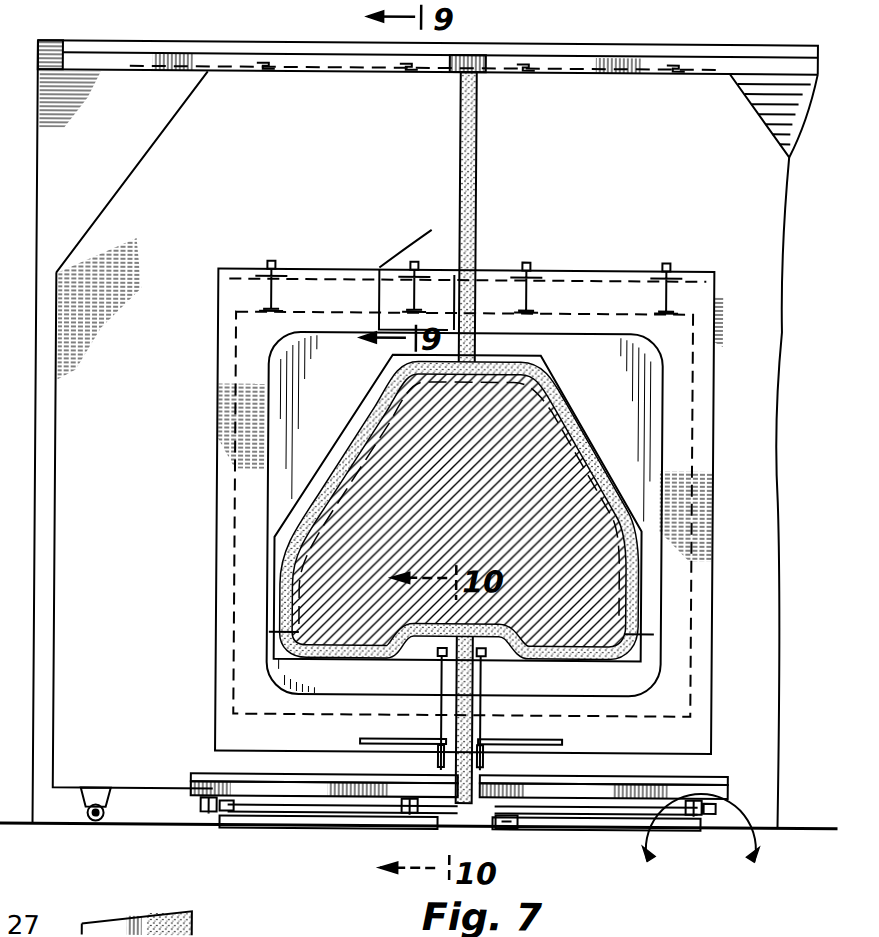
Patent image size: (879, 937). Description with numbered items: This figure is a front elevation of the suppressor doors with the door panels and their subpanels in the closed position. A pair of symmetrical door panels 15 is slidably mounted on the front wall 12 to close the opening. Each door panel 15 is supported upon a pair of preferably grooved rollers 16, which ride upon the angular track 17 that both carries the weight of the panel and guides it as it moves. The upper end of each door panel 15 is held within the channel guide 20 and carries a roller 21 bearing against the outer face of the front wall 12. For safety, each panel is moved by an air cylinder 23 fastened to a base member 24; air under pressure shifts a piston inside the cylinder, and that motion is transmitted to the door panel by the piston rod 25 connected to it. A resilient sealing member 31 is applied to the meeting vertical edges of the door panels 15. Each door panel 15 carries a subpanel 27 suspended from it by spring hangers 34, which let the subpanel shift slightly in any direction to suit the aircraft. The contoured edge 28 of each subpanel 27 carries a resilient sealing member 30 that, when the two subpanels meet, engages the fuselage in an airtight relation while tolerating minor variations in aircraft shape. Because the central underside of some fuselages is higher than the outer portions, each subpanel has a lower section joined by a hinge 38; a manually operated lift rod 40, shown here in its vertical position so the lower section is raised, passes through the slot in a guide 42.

The front wall 12 is at (696, 851).
The door panel 15 is at (337, 162).
The rollers 16 is at (85, 824).
The angular track 17 is at (163, 825).
The channel guide 20 is at (107, 64).
The roller 21 is at (262, 62).
The air cylinder 23 is at (285, 802).
The base member 24 is at (315, 824).
The piston rod 25 is at (216, 812).
The subpanel 27 is at (328, 432).
The contoured edge 28 is at (332, 492).
The resilient sealing member 30 is at (566, 432).
The resilient sealing member 31 is at (476, 163).
The spring hangers 34 is at (270, 268).
The hinge 38 is at (233, 648).
The lift rod 40 is at (440, 686).
The guide 42 is at (405, 738).